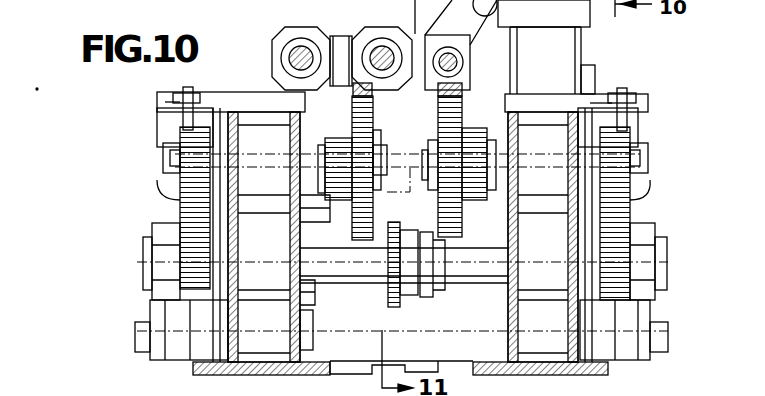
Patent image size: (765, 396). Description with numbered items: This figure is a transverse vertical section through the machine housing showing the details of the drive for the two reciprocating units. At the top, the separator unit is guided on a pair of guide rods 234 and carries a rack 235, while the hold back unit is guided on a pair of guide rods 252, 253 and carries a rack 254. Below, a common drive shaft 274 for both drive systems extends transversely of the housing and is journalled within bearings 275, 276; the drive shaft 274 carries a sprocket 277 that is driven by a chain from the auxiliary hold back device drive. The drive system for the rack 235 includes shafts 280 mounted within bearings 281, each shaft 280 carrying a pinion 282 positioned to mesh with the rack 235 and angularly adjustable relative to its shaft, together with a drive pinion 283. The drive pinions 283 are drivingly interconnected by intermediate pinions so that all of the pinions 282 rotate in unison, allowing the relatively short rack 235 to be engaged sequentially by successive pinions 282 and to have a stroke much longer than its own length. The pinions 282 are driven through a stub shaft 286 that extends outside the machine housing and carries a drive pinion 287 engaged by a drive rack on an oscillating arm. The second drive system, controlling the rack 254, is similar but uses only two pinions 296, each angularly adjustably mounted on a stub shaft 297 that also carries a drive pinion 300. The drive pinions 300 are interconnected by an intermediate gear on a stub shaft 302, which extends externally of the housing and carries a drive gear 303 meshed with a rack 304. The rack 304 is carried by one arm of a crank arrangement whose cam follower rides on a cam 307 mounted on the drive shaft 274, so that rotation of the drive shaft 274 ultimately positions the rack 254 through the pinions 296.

The guide rods 234 is at (292, 50).
The rack 235 is at (345, 55).
The guide rod 252 is at (498, 8).
The guide rod 253 is at (465, 52).
The rack 254 is at (462, 85).
The drive shaft 274 is at (455, 272).
The bearing 275 is at (310, 290).
The bearing 276 is at (525, 283).
The sprocket 277 is at (386, 262).
The shaft 280 is at (322, 200).
The bearing 281 is at (275, 140).
The pinion 282 is at (372, 107).
The drive pinion 283 is at (335, 140).
The stub shaft 286 is at (172, 160).
The drive pinion 287 is at (183, 135).
The pinion 296 is at (375, 121).
The stub shaft 297 is at (495, 195).
The drive pinion 300 is at (432, 168).
The stub shaft 302 is at (648, 138).
The drive gear 303 is at (612, 128).
The rack 304 is at (632, 185).
The cam 307 is at (620, 215).